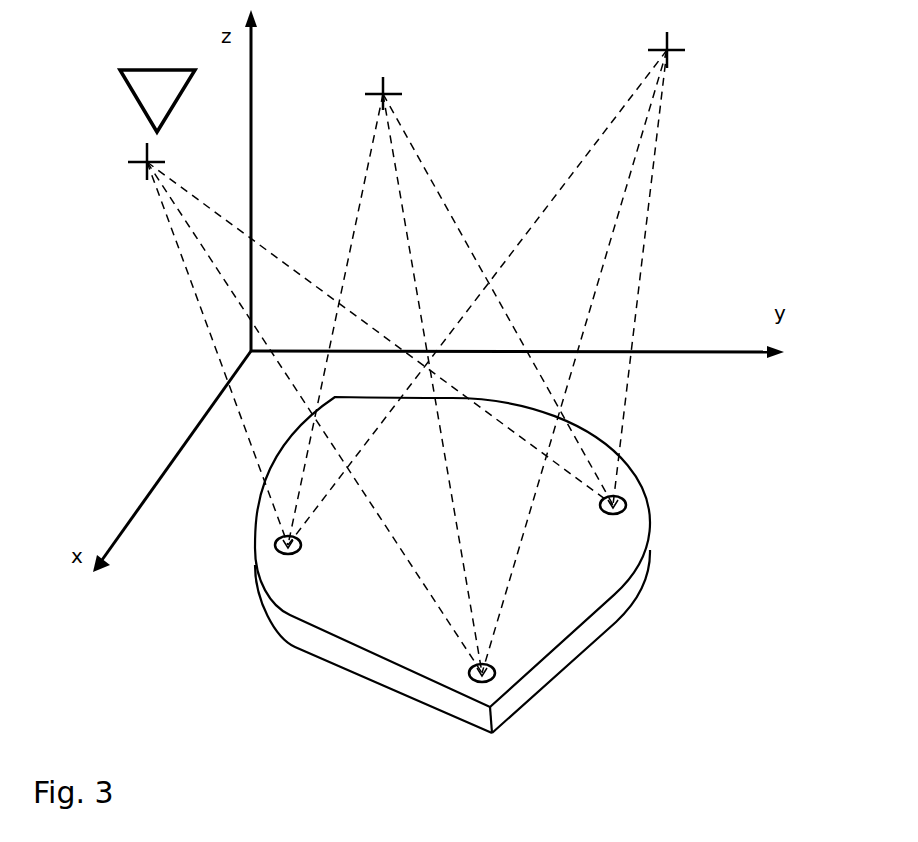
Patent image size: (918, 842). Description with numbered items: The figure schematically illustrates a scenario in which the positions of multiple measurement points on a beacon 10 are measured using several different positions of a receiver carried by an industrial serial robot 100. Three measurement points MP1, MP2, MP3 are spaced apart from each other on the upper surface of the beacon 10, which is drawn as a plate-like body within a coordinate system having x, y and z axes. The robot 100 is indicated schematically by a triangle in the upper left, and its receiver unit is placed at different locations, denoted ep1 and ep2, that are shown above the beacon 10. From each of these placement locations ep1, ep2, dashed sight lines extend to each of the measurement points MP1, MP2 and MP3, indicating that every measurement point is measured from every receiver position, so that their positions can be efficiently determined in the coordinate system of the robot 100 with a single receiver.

The industrial serial robot 100 is at (122, 92).
The beacon 10 is at (259, 592).
The receiver unit placement location ep1 is at (130, 157).
The receiver unit placement location ep2 is at (541, 65).
The measurement point MP1 is at (293, 558).
The measurement point MP2 is at (457, 665).
The measurement point MP3 is at (608, 517).